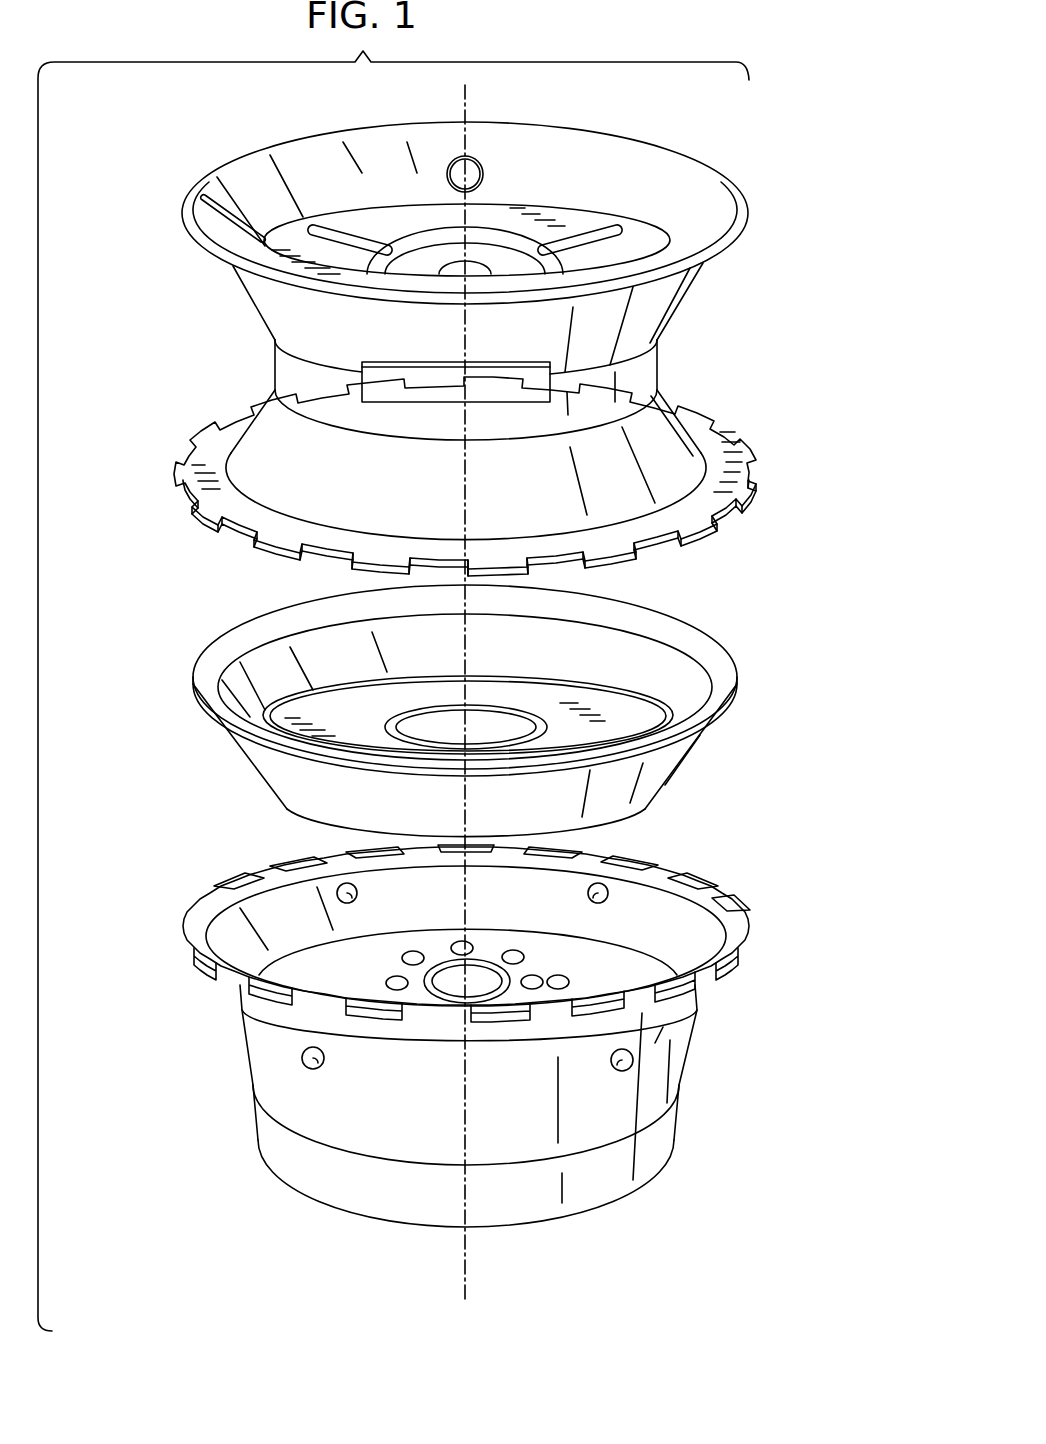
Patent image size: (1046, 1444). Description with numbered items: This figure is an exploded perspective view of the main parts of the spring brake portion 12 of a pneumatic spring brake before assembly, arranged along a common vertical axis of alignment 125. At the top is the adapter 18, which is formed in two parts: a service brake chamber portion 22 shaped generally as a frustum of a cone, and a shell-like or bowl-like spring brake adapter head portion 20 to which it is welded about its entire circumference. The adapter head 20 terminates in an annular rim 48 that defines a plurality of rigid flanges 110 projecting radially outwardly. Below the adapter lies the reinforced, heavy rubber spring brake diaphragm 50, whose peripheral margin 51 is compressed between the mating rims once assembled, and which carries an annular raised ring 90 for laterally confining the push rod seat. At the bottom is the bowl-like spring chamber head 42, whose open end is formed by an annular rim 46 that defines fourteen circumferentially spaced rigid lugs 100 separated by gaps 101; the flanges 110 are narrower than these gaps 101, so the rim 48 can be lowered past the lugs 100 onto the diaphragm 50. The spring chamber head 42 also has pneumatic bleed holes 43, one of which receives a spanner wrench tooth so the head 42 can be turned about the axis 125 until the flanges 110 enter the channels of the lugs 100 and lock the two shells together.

The spring brake portion 12 is at (830, 598).
The adapter 18 is at (735, 289).
The service brake chamber portion 22 is at (262, 290).
The spring brake adapter head portion 20 is at (645, 414).
The annular rim 48 is at (725, 451).
The flanges 110 is at (255, 538).
The spring brake diaphragm 50 is at (690, 768).
The periphery 51 is at (722, 658).
The annular raised ring 90 is at (528, 716).
The spring chamber head 42 is at (680, 1128).
The annular rim 46 is at (663, 884).
The lugs 100 is at (743, 904).
The gaps 101 is at (340, 852).
The pneumatic bleed holes 43 is at (357, 893).
The vertical axis of alignment 125 is at (465, 1260).